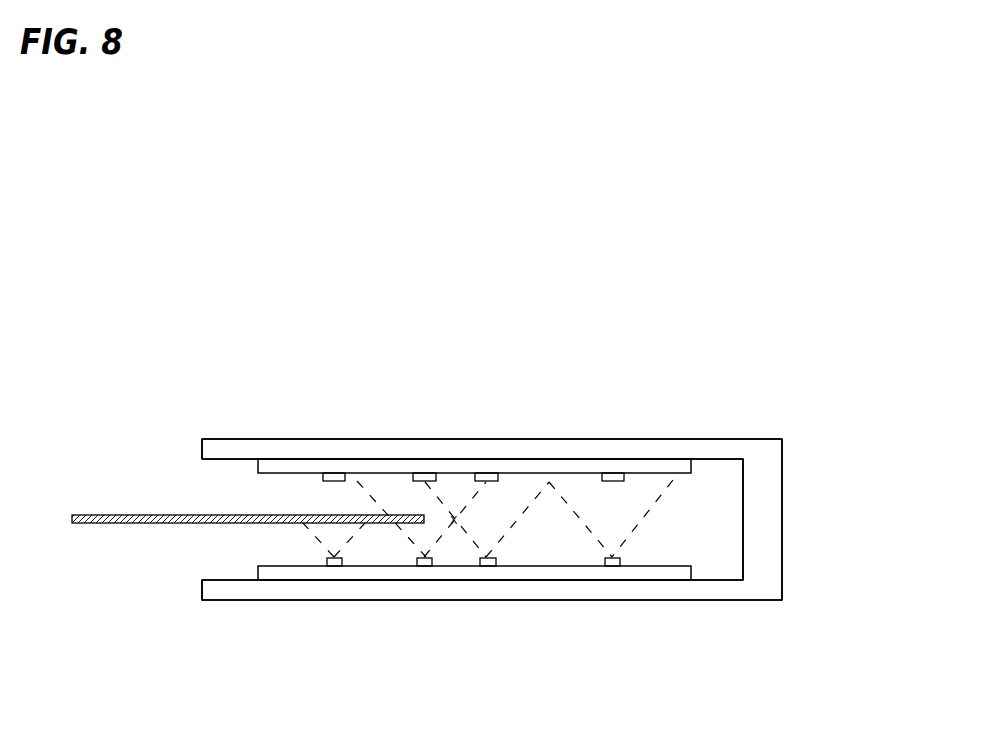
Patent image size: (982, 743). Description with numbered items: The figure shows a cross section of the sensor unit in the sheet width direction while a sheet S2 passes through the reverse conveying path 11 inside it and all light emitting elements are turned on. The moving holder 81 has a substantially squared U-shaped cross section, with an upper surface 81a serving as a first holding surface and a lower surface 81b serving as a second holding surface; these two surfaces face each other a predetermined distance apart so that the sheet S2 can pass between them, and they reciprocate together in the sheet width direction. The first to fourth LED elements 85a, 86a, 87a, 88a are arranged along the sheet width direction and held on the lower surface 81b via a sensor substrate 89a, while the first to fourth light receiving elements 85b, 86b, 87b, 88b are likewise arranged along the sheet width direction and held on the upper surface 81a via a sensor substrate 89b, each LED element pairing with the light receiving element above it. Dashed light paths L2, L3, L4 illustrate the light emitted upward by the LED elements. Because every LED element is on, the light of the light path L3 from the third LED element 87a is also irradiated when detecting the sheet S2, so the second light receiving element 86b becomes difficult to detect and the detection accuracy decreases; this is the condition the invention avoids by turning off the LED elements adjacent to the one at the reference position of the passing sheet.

The moving holder 81 is at (768, 508).
The upper surface 81a is at (217, 447).
The lower surface 81b is at (223, 595).
The reverse conveying path 11 is at (713, 517).
The sensor substrate 89b is at (268, 461).
The sensor substrate 89a is at (268, 574).
The sheet S2 is at (135, 515).
The first light receiving element 85b is at (336, 472).
The second light receiving element 86b is at (430, 472).
The third light receiving element 87b is at (482, 472).
The fourth light receiving element 88b is at (612, 472).
The first LED element 85a is at (325, 566).
The second LED element 86a is at (420, 566).
The third LED element 87a is at (485, 566).
The fourth LED element 88a is at (610, 566).
The light path L2 is at (394, 519).
The light path L3 is at (487, 519).
The light path L4 is at (611, 518).